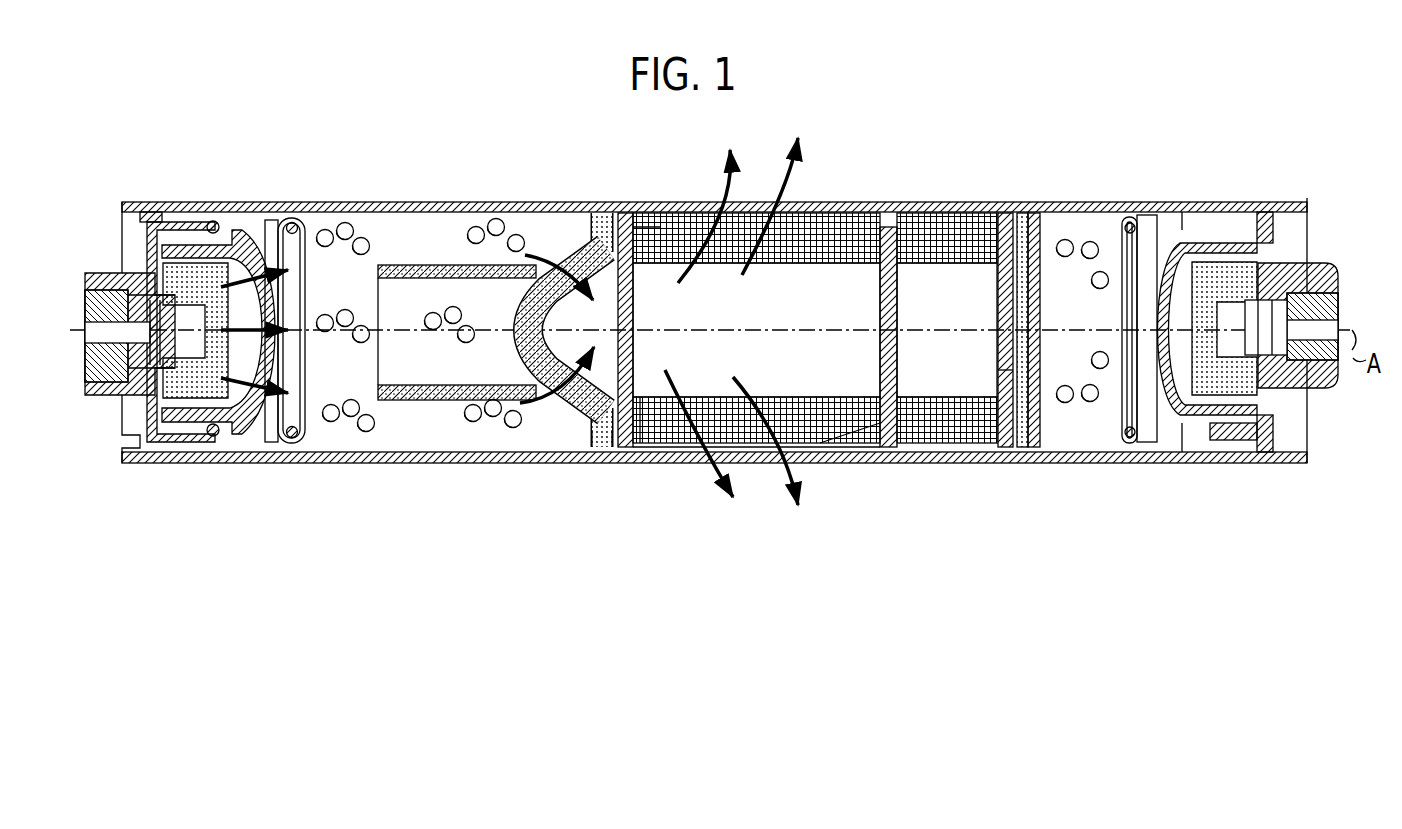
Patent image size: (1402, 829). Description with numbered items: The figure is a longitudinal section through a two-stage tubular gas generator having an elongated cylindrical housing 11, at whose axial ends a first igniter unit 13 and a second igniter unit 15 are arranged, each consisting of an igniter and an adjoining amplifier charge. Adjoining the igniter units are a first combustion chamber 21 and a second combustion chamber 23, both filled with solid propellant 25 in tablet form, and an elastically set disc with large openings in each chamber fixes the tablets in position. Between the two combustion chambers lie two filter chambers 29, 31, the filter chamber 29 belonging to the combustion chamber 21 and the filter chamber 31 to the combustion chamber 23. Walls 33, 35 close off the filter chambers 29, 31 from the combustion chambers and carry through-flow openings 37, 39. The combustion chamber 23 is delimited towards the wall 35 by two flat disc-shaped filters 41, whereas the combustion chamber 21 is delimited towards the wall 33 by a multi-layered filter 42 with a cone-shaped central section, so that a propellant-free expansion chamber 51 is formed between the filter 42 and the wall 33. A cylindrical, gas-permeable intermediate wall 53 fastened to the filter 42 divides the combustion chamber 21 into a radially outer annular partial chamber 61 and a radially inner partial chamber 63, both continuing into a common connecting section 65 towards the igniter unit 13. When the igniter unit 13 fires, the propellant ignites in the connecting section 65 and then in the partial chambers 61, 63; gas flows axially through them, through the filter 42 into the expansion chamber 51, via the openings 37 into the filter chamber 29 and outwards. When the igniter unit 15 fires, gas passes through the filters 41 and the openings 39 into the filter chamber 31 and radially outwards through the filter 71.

The housing 11 is at (463, 205).
The first igniter unit 13 is at (177, 205).
The second igniter unit 15 is at (1236, 203).
The first combustion chamber 21 is at (382, 233).
The second combustion chamber 23 is at (1087, 223).
The solid propellant 25 is at (352, 432).
The first filter chamber 29 is at (656, 278).
The second filter chamber 31 is at (960, 278).
The wall 33 is at (637, 205).
The wall 35 is at (1013, 230).
The through-flow openings 37 is at (640, 385).
The through-flow openings 39 is at (1008, 387).
The disc-shaped filters 41 is at (1040, 433).
The multi-layered filter 42 is at (590, 430).
The expansion chamber 51 is at (565, 315).
The cylindrical intermediate wall 53 is at (490, 400).
The radially outer partial chamber 61 is at (415, 228).
The radially inner partial chamber 63 is at (417, 375).
The connecting section 65 is at (318, 253).
The filter 71 is at (905, 432).